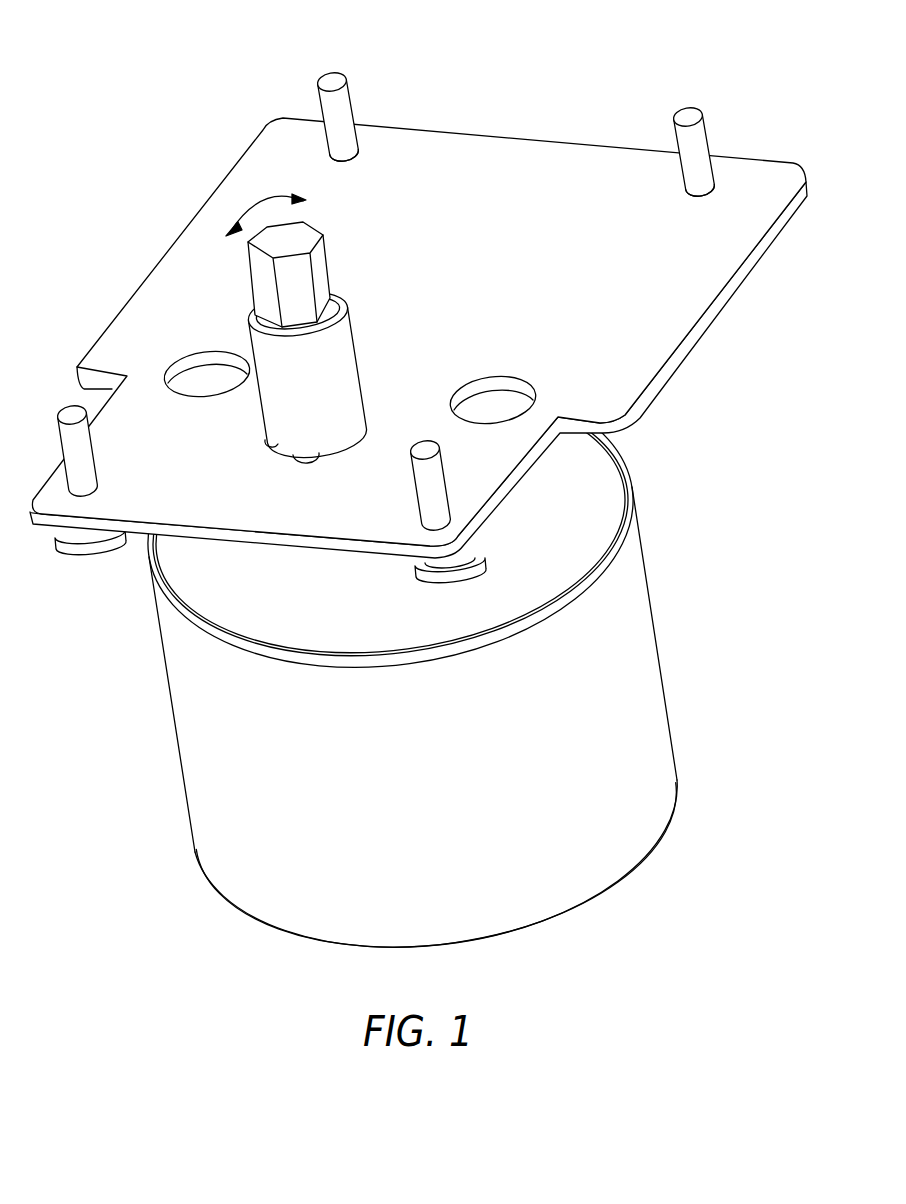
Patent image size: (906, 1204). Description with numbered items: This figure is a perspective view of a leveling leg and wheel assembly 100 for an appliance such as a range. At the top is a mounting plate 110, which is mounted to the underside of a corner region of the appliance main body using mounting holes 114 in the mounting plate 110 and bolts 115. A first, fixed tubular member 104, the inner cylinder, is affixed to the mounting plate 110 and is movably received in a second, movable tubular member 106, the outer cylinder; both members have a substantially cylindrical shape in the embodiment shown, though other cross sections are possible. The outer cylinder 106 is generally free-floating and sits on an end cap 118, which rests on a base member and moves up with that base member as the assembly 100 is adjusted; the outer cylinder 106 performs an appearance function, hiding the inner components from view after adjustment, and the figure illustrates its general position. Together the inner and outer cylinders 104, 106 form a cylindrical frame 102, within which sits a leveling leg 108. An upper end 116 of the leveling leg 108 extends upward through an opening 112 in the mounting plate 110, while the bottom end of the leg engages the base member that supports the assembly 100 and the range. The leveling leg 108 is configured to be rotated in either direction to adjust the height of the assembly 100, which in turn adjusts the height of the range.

The leveling leg and wheel assembly 100 is at (177, 115).
The cylindrical frame 102 is at (403, 648).
The first tubular member 104 is at (568, 470).
The second tubular member 106 is at (623, 630).
The leveling leg 108 is at (328, 423).
The mounting plate 110 is at (678, 268).
The opening 112 is at (293, 460).
The mounting holes 114 is at (336, 158).
The bolts 115 is at (345, 100).
The upper end 116 is at (317, 347).
The end cap 118 is at (658, 848).